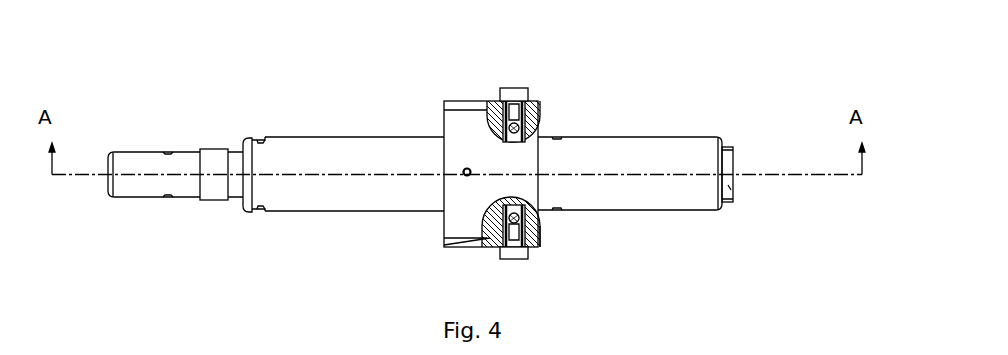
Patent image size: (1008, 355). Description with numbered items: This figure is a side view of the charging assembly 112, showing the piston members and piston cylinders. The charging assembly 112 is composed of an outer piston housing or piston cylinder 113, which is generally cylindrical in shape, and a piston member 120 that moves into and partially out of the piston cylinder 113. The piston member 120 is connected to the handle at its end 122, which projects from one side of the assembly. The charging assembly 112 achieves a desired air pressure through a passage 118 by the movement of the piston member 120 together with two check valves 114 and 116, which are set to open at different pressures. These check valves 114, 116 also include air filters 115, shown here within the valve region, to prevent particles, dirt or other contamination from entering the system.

The charging assembly 112 is at (625, 82).
The piston cylinder 113 is at (292, 152).
The check valve 114 is at (478, 83).
The air filter 115 is at (520, 88).
The check valve 116 is at (553, 253).
The passage 118 is at (463, 176).
The piston member 120 is at (205, 204).
The end 122 is at (127, 195).